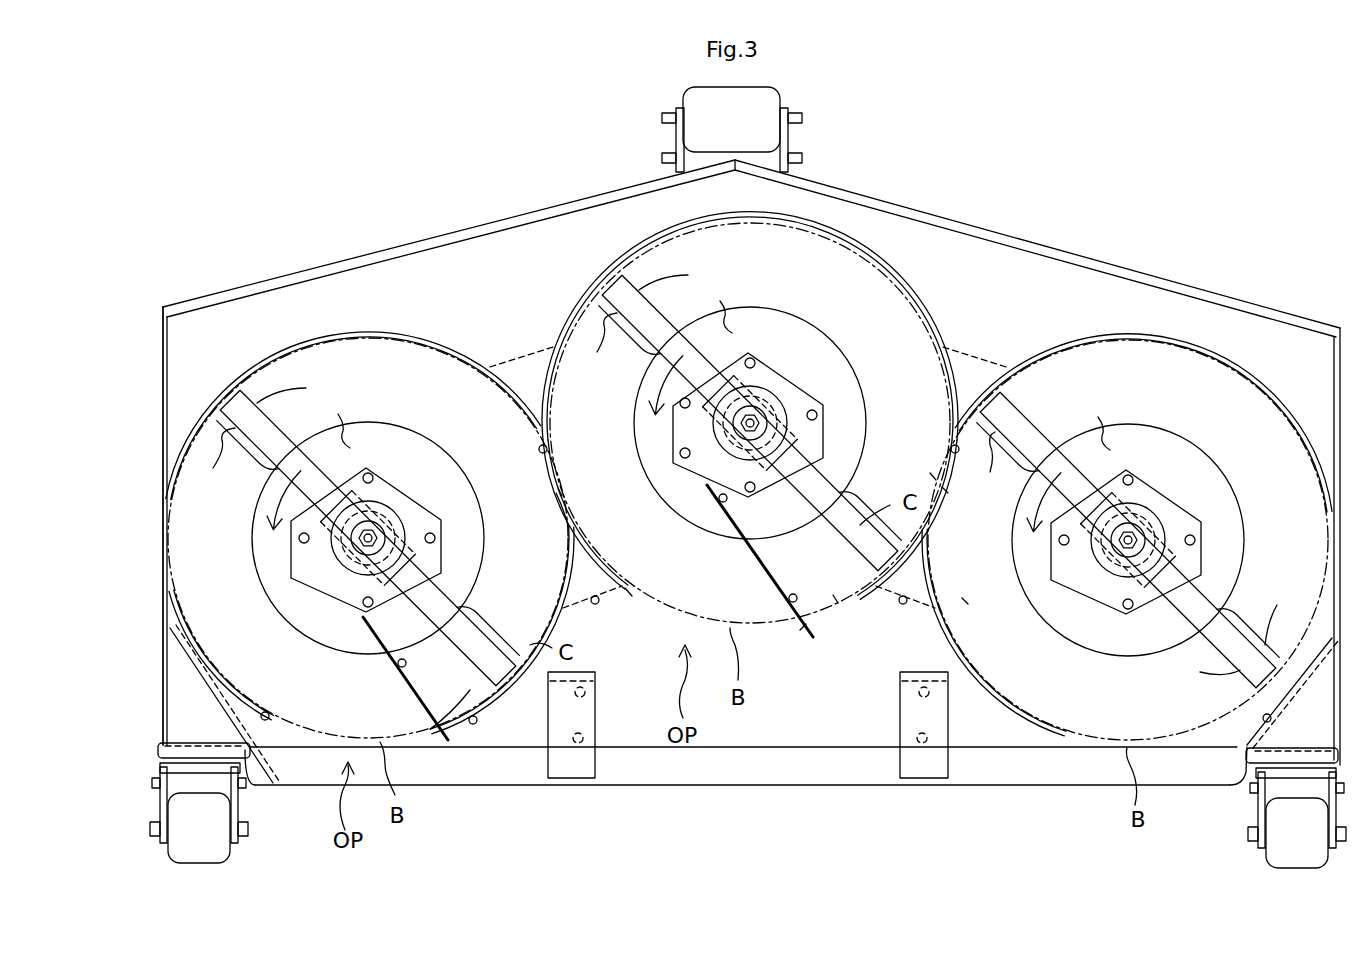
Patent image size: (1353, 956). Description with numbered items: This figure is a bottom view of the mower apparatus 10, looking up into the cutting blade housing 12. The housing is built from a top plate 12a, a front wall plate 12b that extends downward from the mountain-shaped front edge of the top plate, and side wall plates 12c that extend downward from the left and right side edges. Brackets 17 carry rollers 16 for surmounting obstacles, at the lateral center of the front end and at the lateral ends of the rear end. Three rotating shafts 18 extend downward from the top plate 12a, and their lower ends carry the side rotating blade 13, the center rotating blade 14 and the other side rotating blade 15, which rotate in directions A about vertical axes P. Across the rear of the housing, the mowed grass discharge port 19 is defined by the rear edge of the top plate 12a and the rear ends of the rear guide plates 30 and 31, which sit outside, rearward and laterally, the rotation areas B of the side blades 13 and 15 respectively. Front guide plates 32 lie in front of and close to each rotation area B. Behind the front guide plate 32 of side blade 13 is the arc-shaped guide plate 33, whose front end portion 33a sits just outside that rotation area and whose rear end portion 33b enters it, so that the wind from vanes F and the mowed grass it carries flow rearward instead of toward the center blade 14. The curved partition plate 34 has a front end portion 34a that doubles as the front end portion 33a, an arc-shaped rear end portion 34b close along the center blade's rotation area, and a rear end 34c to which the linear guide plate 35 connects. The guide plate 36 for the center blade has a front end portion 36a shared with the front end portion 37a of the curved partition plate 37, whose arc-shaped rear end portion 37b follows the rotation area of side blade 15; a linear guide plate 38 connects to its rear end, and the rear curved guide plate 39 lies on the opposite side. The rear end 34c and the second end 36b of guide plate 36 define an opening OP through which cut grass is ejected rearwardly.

The mower apparatus 10 is at (392, 190).
The cutting blade housing 12 is at (1045, 247).
The top plate 12a is at (568, 240).
The front wall plate 12b is at (488, 232).
The side wall plate 12c is at (165, 388).
The side rotating blade 13 is at (1128, 540).
The center rotating blade 14 is at (750, 423).
The side rotating blade 15 is at (368, 538).
The roller 16 is at (770, 100).
The bracket 17 is at (795, 165).
The rotating shaft 18 is at (371, 532).
The mowed grass discharge port 19 is at (750, 772).
The rear guide plate 30 is at (1260, 727).
The rear guide plate 31 is at (250, 727).
The front guide plate 32 is at (355, 330).
The guide plate for the side blade 33 is at (945, 560).
The front end portion 33a is at (942, 487).
The rear end portion 33b is at (962, 598).
The curved partition plate 34 is at (866, 584).
The front end portion 34a is at (930, 473).
The rear end portion 34b is at (833, 595).
The rear end 34c is at (800, 630).
The linear guide plate 35 is at (760, 563).
The guide plate for the center blade 36 is at (592, 546).
The front end portion 36a is at (558, 488).
The second end 36b is at (625, 588).
The curved partition plate 37 is at (565, 580).
The front end portion 37a is at (553, 493).
The rear end portion 37b is at (543, 625).
The linear guide plate 38 is at (388, 655).
The rear curved guide plate 39 is at (208, 665).